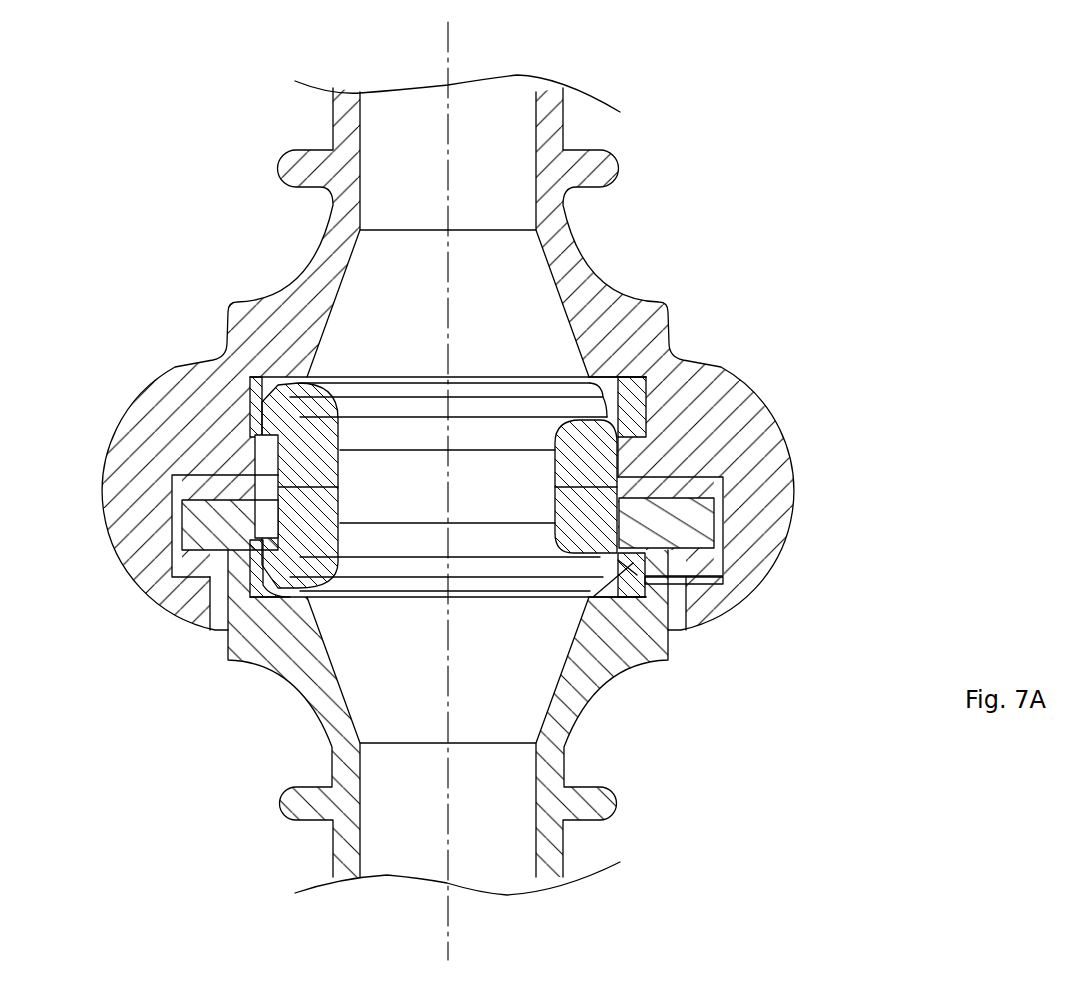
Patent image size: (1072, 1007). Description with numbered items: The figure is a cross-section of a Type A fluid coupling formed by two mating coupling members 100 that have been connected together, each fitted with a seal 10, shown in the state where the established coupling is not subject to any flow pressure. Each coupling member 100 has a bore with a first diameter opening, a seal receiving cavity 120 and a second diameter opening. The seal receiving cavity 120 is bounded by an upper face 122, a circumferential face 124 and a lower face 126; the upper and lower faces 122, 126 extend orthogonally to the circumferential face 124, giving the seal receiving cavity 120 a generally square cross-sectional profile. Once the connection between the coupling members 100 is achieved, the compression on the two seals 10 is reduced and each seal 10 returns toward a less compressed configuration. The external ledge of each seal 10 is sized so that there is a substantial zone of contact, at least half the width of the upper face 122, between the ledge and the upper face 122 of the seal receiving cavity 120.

The seal 10 is at (540, 423).
The female coupling member 100 is at (613, 293).
The seal receiving cavity 120 is at (637, 580).
The upper face 122 is at (643, 543).
The circumferential face 124 is at (645, 578).
The lower face 126 is at (595, 378).